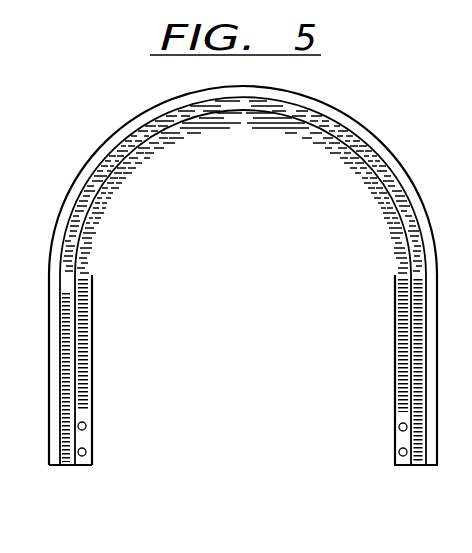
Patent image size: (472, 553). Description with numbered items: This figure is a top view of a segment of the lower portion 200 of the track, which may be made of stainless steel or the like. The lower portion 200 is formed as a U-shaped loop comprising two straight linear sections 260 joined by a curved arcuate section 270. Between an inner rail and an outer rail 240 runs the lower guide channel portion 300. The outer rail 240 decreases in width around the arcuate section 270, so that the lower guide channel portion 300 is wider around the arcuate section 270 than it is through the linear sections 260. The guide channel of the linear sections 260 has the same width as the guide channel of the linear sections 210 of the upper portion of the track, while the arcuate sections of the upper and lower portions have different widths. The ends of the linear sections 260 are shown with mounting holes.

The lower portion 200 is at (120, 125).
The outer rail 240 is at (82, 170).
The arcuate section 270 is at (240, 85).
The lower guide channel portion 300 is at (338, 133).
The linear sections 210 is at (190, 133).
The linear sections 260 is at (47, 420).